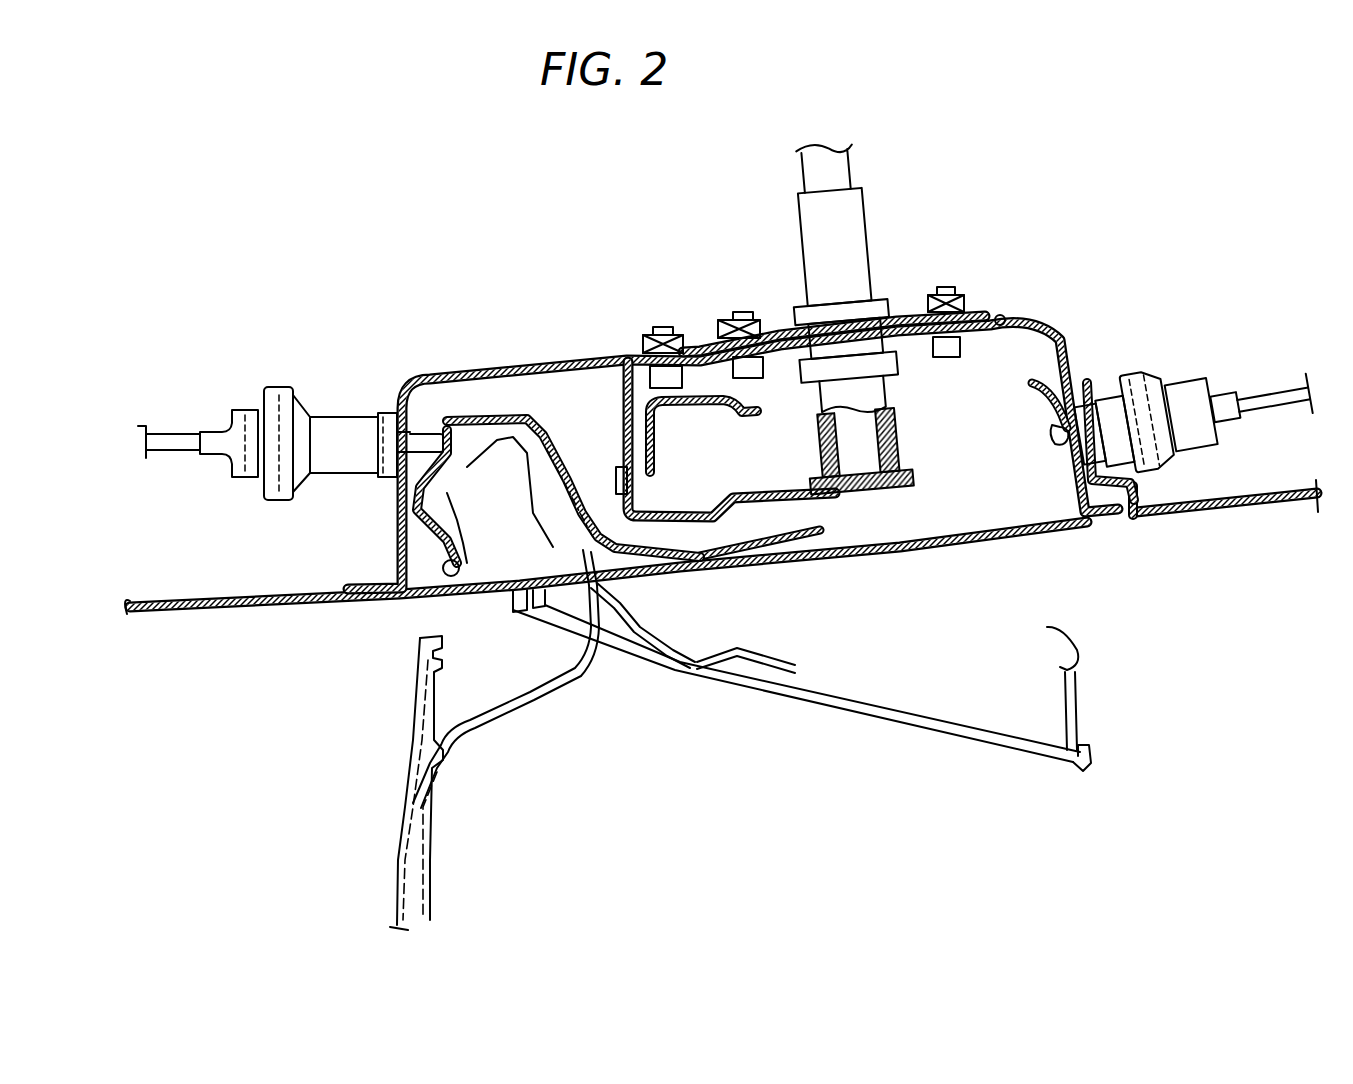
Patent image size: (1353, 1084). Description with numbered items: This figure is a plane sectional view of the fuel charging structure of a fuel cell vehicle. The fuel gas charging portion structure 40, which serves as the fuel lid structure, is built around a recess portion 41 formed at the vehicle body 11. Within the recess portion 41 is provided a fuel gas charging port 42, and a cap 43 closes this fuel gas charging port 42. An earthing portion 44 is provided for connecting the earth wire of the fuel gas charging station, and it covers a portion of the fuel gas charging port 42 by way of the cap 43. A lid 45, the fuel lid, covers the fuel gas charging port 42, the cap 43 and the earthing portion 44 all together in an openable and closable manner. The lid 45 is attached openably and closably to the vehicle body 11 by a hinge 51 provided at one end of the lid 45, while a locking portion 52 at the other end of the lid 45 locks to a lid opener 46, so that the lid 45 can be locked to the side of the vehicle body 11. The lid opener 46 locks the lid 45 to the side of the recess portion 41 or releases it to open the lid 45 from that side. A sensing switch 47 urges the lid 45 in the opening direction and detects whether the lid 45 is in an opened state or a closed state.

The vehicle body 11 is at (180, 640).
The fuel gas charging portion structure 40 is at (205, 182).
The recess portion 41 is at (1000, 314).
The fuel gas charging port 42 is at (878, 206).
The cap 43 is at (872, 493).
The earthing portion 44 is at (765, 518).
The lid 45 is at (1060, 530).
The lid opener 46 is at (1130, 372).
The sensing switch 47 is at (335, 405).
The hinge 51 is at (453, 595).
The locking portion 52 is at (1060, 447).